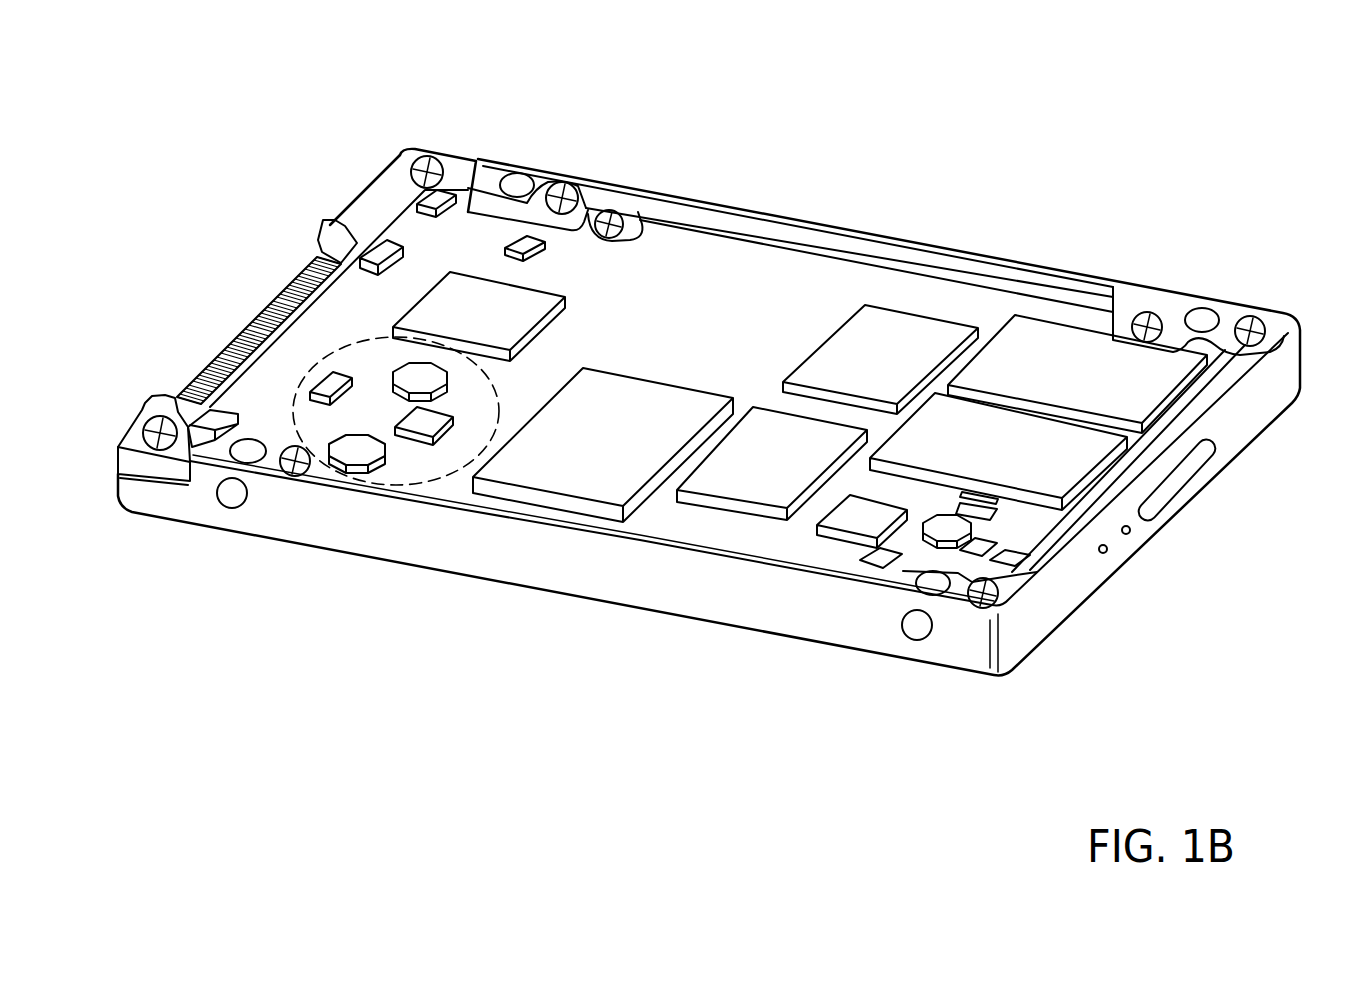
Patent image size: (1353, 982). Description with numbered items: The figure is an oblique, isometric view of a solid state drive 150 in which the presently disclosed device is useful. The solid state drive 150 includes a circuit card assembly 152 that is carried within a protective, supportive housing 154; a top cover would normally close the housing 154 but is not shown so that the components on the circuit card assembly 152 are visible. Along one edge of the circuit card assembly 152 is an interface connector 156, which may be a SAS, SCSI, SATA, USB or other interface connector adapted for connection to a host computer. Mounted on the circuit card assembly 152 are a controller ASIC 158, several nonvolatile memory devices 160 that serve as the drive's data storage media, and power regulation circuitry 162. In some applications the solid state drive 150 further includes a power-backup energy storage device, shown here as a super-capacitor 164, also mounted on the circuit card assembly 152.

The solid state drive 150 is at (935, 165).
The circuit card assembly 152 is at (800, 262).
The housing 154 is at (442, 563).
The interface connector 156 is at (284, 284).
The controller ASIC 158 is at (462, 314).
The nonvolatile memory devices 160 is at (1005, 442).
The power regulation circuitry 162 is at (367, 488).
The super-capacitor 164 is at (613, 447).